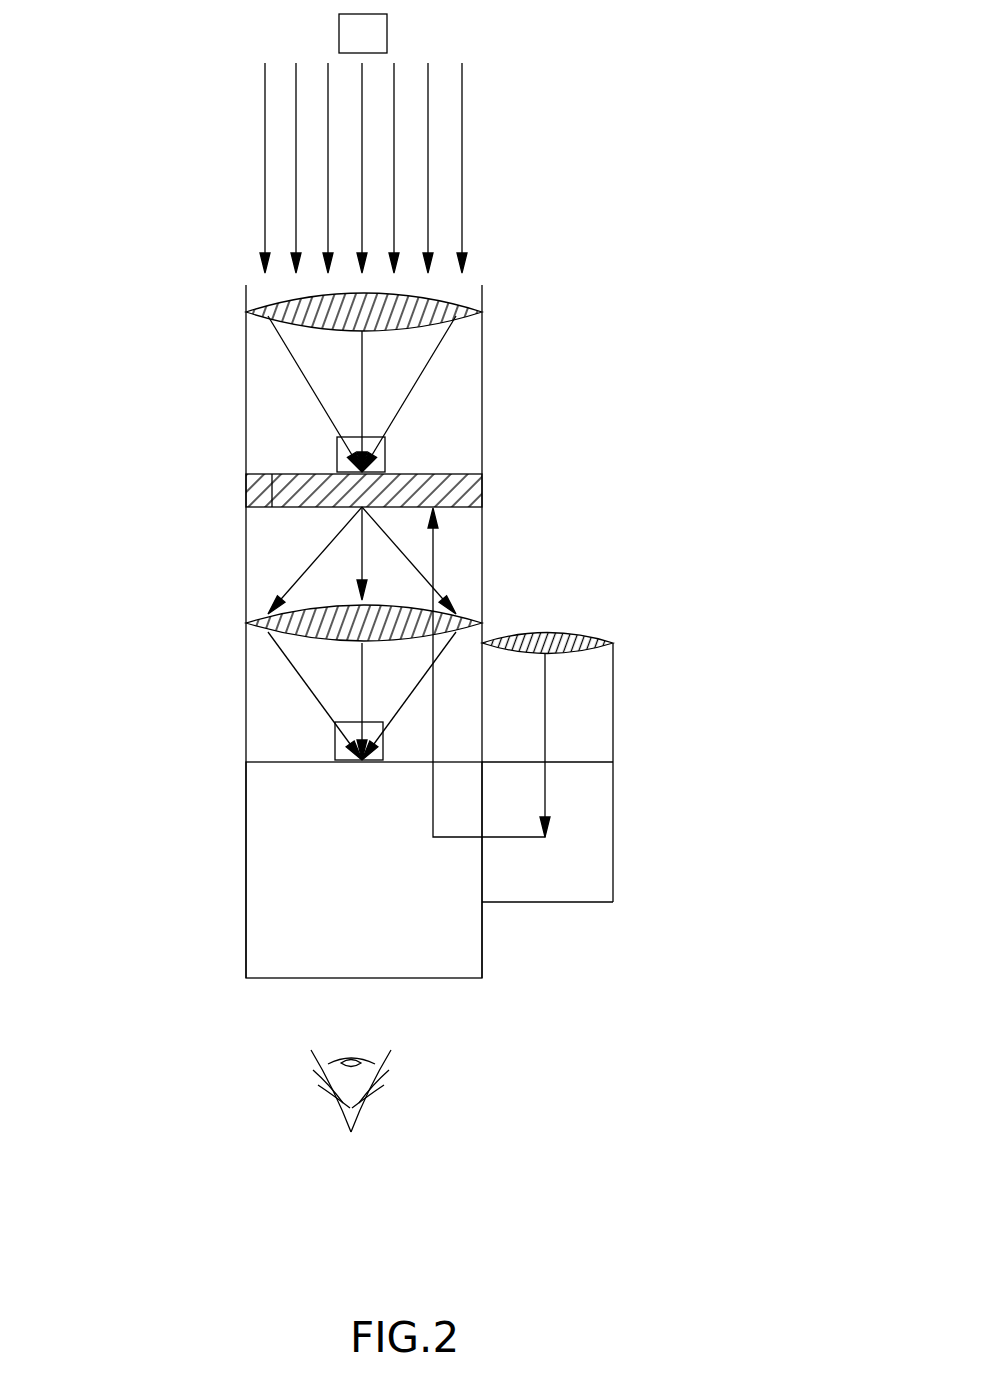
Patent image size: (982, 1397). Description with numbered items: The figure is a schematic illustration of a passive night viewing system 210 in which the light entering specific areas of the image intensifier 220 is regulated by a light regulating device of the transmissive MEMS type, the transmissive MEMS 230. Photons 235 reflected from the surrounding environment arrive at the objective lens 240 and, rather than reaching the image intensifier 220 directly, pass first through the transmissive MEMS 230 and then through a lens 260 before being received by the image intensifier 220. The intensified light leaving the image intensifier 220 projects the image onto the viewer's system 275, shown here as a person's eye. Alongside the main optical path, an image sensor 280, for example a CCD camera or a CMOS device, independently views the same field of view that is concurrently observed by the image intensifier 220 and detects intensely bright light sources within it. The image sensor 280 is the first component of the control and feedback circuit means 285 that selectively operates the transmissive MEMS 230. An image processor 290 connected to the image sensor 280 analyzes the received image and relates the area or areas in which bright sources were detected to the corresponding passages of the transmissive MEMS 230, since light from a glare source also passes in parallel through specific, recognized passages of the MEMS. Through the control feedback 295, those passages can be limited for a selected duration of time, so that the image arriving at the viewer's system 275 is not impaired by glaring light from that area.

The passive night viewing system 210 is at (694, 191).
The image intensifier 220 is at (245, 848).
The transmissive MEMS 230 is at (245, 493).
The photons 235 is at (265, 97).
The objective lens 240 is at (275, 300).
The lens 260 is at (245, 633).
The viewer's system 275 is at (263, 1118).
The image sensor 280 is at (624, 674).
The control and feedback circuit means 285 is at (720, 728).
The image processor 290 is at (632, 879).
The control feedback 295 is at (545, 800).